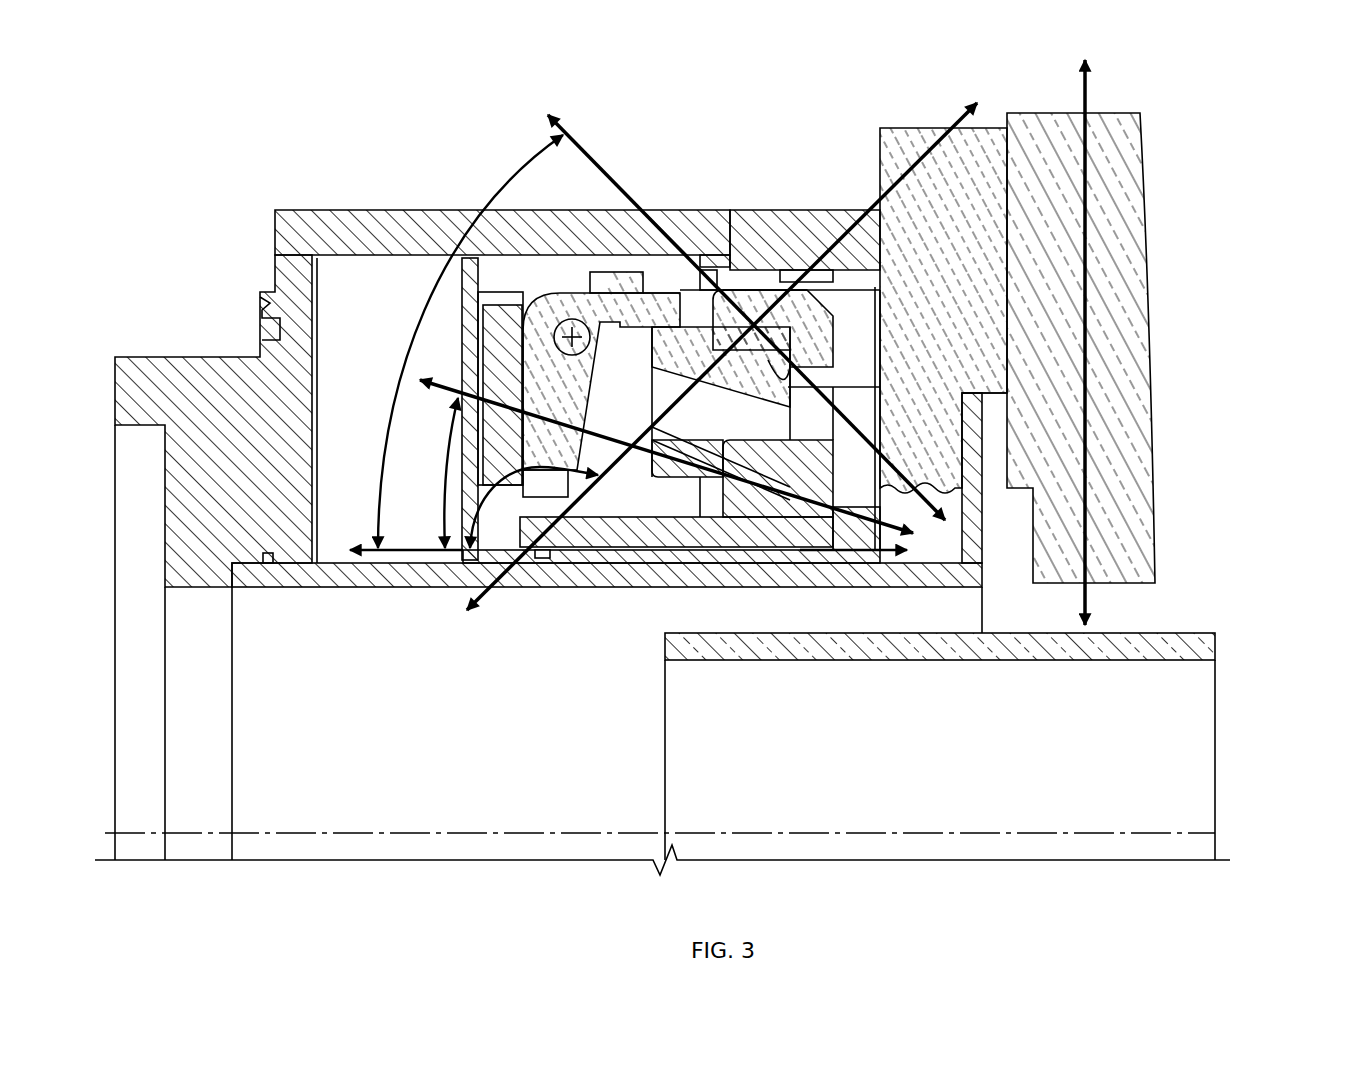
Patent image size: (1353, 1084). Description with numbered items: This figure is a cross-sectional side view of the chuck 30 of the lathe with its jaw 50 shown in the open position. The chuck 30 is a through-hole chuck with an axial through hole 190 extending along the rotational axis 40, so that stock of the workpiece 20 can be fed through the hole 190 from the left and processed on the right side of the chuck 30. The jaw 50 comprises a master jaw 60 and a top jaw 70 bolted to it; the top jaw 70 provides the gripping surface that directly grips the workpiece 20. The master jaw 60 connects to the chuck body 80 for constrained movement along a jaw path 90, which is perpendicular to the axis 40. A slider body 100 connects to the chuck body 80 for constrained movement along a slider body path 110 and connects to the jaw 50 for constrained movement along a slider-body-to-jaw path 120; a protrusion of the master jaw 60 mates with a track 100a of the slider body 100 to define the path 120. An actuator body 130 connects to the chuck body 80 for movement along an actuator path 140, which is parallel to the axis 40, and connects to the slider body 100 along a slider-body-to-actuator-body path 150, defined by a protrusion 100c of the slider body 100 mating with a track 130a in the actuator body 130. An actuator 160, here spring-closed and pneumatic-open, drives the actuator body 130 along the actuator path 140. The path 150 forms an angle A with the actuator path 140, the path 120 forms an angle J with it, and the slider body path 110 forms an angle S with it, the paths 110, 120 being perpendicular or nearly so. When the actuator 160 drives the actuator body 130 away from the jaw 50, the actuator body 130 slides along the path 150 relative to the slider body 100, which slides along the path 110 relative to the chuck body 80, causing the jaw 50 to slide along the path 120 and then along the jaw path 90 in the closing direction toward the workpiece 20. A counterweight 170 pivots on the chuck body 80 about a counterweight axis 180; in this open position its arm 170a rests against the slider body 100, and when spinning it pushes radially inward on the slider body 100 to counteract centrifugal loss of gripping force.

The workpiece 20 is at (1217, 740).
The chuck 30 is at (1250, 72).
The rotational axis 40 is at (993, 835).
The jaw 50 is at (890, 145).
The master jaw 60 is at (747, 300).
The top jaw 70 is at (1125, 185).
The chuck body 80 is at (440, 218).
The jaw path 90 is at (1085, 95).
The slider body 100 is at (812, 337).
The track 100a is at (790, 397).
The protrusion 100c is at (680, 480).
The slider body path 110 is at (947, 112).
The slider-body-to-jaw path 120 is at (557, 132).
The actuator body 130 is at (611, 588).
The track 130a is at (823, 513).
The actuator path 140 is at (408, 550).
The slider-body-to-actuator-body path 150 is at (258, 347).
The actuator 160 is at (400, 195).
The counterweight 170 is at (578, 302).
The counterweight arm 170a is at (657, 310).
The counterweight axis 180 is at (505, 317).
The axial through hole 190 is at (327, 723).
The angle J is at (448, 377).
The angle A is at (443, 457).
The angle S is at (478, 513).